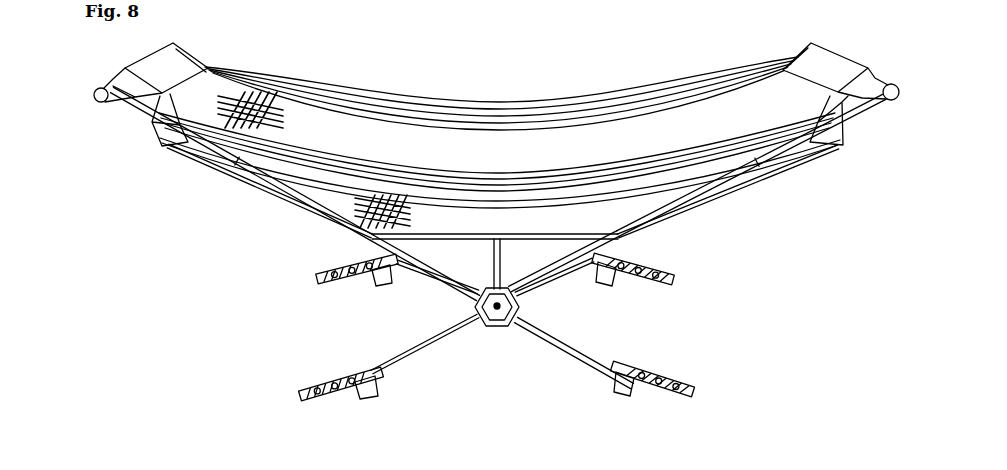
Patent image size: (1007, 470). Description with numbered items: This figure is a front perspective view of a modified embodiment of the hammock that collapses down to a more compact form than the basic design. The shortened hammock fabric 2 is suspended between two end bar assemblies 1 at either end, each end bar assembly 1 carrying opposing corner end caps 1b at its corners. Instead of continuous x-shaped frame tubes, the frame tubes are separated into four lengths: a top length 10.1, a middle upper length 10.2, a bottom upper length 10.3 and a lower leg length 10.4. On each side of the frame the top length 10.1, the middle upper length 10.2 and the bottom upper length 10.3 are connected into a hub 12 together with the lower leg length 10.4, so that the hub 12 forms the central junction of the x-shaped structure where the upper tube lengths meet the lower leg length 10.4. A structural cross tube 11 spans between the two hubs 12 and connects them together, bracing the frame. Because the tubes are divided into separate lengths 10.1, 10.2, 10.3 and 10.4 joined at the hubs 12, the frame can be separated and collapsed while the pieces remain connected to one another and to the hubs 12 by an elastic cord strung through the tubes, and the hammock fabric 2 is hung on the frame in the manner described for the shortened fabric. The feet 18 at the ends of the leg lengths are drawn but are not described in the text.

The end bar assembly 1 is at (76, 106).
The corner end cap 1b is at (123, 90).
The hammock fabric 2 is at (535, 137).
The top length 10.1 is at (200, 145).
The middle upper length 10.2 is at (310, 201).
The bottom upper length 10.3 is at (420, 267).
The lower leg length 10.4 is at (571, 352).
The structural cross tube 11 is at (433, 293).
The hub 12 is at (496, 308).
The foot 18 is at (630, 393).